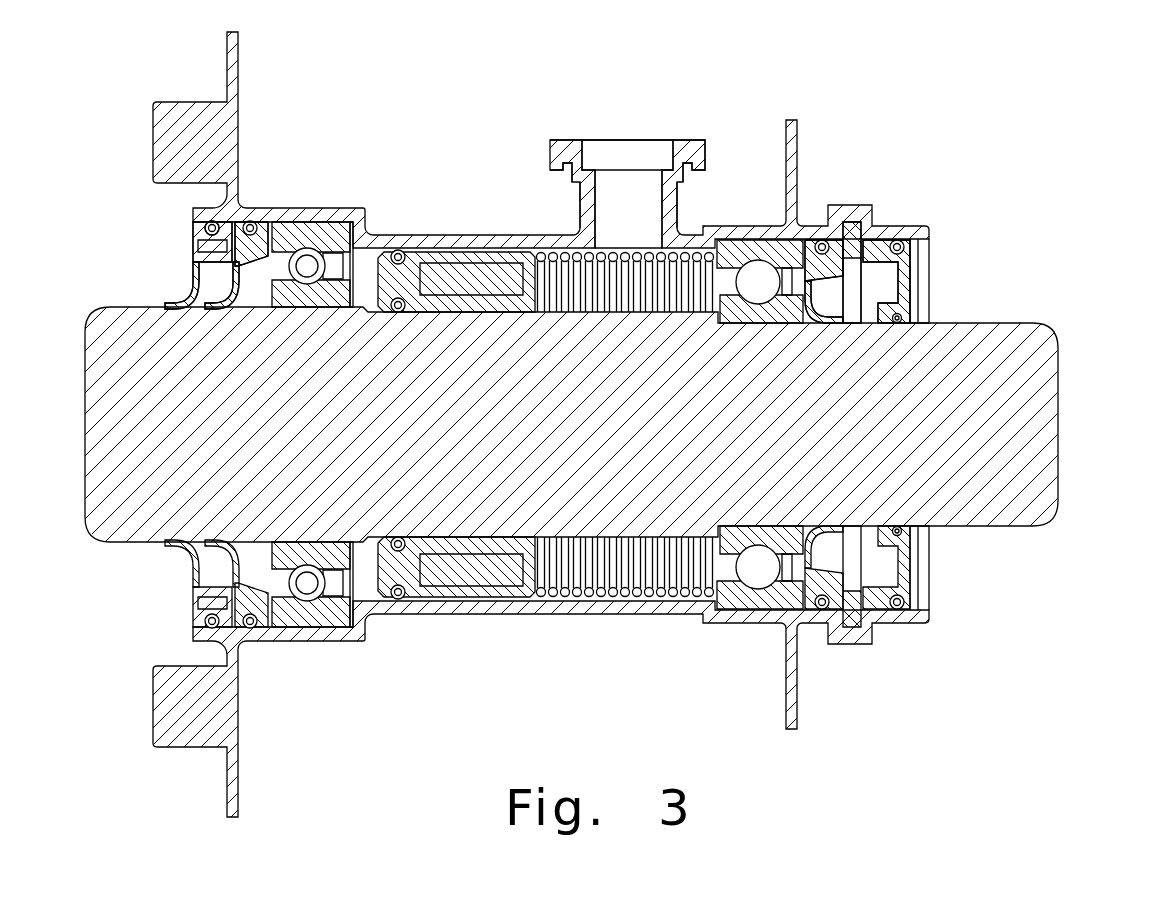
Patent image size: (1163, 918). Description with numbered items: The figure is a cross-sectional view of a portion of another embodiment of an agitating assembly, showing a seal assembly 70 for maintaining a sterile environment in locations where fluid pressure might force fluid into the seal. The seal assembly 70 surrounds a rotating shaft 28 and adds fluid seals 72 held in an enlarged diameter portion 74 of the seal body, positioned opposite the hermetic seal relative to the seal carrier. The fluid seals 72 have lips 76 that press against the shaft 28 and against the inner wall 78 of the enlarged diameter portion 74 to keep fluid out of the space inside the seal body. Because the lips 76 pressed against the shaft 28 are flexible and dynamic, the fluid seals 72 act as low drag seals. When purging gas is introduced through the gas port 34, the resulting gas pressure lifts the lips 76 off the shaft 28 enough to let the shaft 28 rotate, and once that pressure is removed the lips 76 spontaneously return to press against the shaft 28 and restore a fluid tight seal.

The shaft 28 is at (1025, 352).
The gas port 34 is at (581, 210).
The seal assembly 70 is at (837, 174).
The fluid seals 72 is at (251, 238).
The enlarged diameter portion 74 is at (330, 212).
The lips 76 is at (203, 291).
The inner wall 78 is at (205, 225).